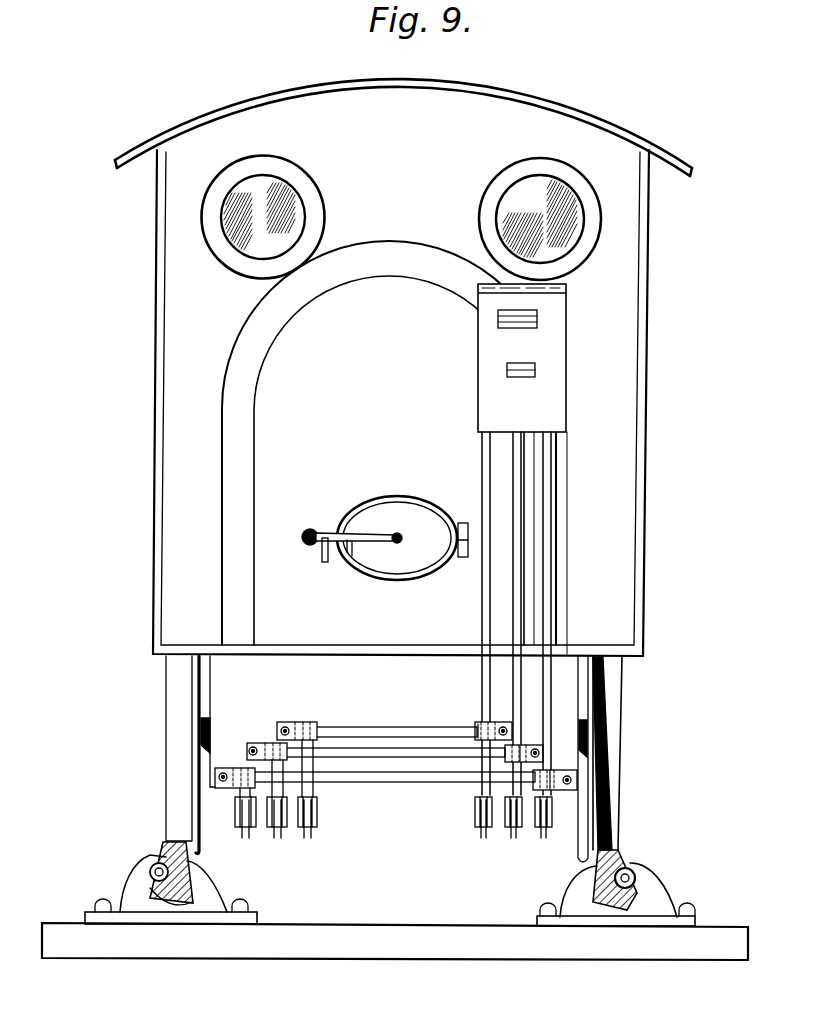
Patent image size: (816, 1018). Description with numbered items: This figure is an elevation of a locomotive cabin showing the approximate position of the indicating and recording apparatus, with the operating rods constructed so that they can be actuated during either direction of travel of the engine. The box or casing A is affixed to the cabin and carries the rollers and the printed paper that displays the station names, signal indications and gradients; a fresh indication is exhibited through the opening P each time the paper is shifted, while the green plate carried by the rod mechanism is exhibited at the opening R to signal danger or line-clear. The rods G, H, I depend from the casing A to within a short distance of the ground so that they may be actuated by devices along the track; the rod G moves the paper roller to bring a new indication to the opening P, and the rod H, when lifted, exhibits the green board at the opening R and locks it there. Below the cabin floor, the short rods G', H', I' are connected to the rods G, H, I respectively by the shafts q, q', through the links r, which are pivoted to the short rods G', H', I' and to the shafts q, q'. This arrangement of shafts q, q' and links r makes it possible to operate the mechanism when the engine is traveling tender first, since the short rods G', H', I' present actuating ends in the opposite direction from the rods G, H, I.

The box or casing A is at (555, 316).
The opening P is at (515, 320).
The opening R is at (520, 370).
The rod G is at (484, 635).
The rod H is at (555, 635).
The rod I is at (564, 635).
The short rod G' is at (320, 789).
The short rod H' is at (284, 807).
The short rod I' is at (247, 821).
The shaft q is at (375, 789).
The shaft q' is at (376, 735).
The link r is at (478, 724).